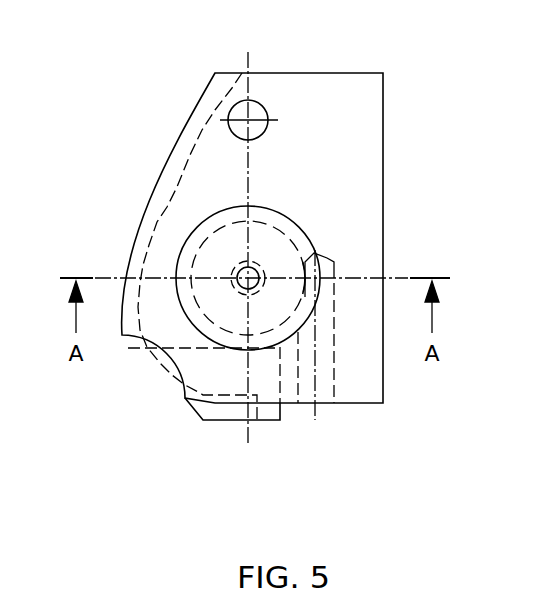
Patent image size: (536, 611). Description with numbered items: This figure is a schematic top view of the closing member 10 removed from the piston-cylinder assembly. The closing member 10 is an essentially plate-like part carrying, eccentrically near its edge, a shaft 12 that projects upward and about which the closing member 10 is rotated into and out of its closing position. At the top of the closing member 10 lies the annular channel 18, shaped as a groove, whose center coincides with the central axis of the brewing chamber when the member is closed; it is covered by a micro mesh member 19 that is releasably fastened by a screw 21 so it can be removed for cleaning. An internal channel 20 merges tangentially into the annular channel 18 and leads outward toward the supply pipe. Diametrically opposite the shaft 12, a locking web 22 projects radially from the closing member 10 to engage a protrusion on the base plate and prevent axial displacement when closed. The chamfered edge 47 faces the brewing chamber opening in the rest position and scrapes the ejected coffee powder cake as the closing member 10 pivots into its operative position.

The closing member 10 is at (357, 122).
The shaft 12 is at (258, 108).
The chamfered edge 47 is at (138, 228).
The micro mesh member 19 is at (223, 222).
The screw 21 is at (239, 290).
The annular channel 18 is at (272, 242).
The channel 20 is at (323, 388).
The locking web 22 is at (230, 421).